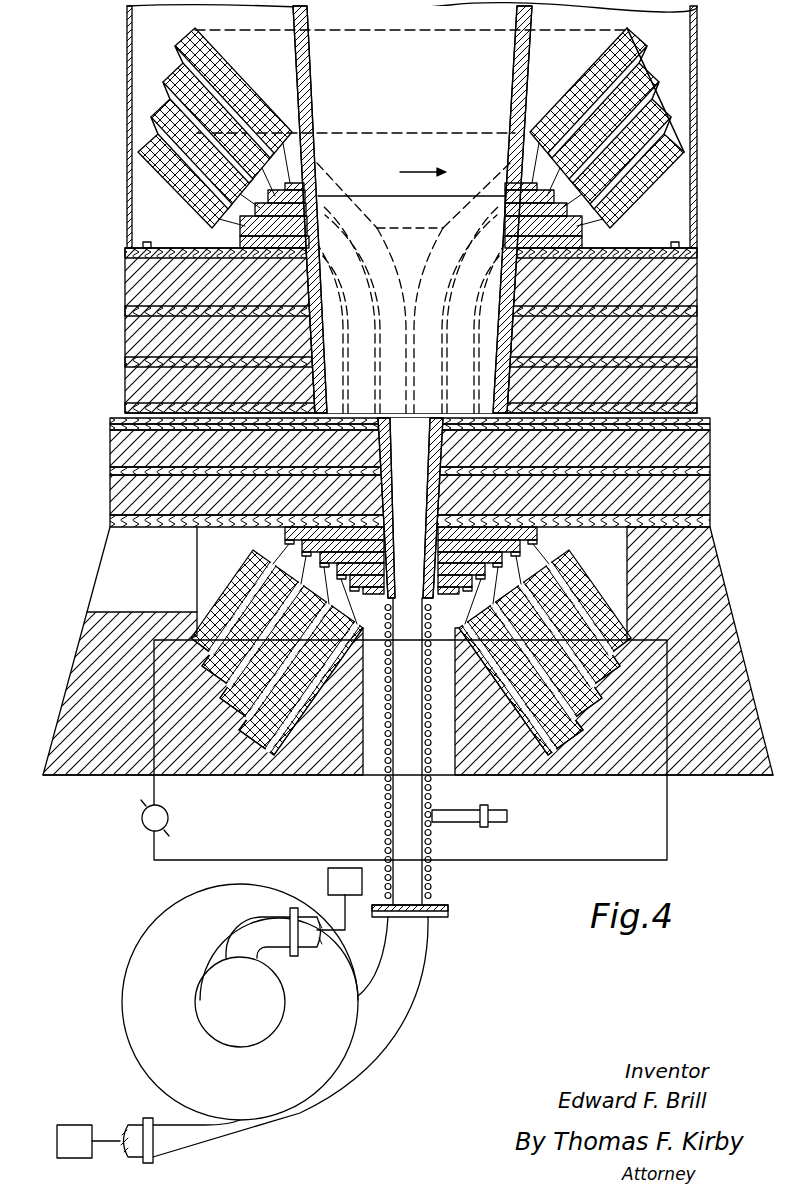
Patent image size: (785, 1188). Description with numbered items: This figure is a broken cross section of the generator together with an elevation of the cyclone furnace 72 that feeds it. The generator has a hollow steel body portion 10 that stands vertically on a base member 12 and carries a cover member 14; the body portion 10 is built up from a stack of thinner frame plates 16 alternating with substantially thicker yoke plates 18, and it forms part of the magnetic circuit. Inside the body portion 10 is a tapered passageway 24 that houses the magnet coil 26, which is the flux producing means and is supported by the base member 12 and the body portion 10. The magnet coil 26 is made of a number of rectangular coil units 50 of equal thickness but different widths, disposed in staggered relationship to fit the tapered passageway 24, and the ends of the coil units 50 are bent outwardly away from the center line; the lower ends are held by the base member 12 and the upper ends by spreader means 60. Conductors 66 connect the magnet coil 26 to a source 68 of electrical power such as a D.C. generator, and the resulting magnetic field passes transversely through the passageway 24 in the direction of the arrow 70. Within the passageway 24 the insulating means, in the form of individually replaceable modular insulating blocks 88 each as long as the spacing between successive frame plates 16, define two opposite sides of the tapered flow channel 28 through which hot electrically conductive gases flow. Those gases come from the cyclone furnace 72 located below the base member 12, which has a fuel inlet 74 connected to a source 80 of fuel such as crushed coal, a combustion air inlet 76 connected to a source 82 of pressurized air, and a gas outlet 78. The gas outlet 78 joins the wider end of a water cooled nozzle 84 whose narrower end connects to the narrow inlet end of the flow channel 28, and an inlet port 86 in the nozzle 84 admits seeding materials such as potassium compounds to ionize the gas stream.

The body portion 10 is at (746, 305).
The base member 12 is at (748, 803).
The cover member 14 is at (742, 91).
The frame plates 16 is at (746, 367).
The yoke plates 18 is at (746, 343).
The passageway 24 is at (478, 308).
The magnet coil 26 is at (740, 163).
The flow channel 28 is at (421, 573).
The coil units 50 is at (180, 72).
The spreader means 60 is at (630, 30).
The conductors 66 is at (153, 786).
The source of electrical power 68 is at (141, 818).
The arrow 70 is at (425, 172).
The cyclone furnace 72 is at (137, 945).
The fuel inlet 74 is at (308, 955).
The combustion air inlet 76 is at (123, 1127).
The gas outlet 78 is at (430, 945).
The source of fuel 80 is at (328, 875).
The source of pressurized air 82 is at (75, 1110).
The water cooled nozzle 84 is at (385, 822).
The inlet port 86 is at (455, 826).
The modular insulating blocks 88 is at (470, 352).